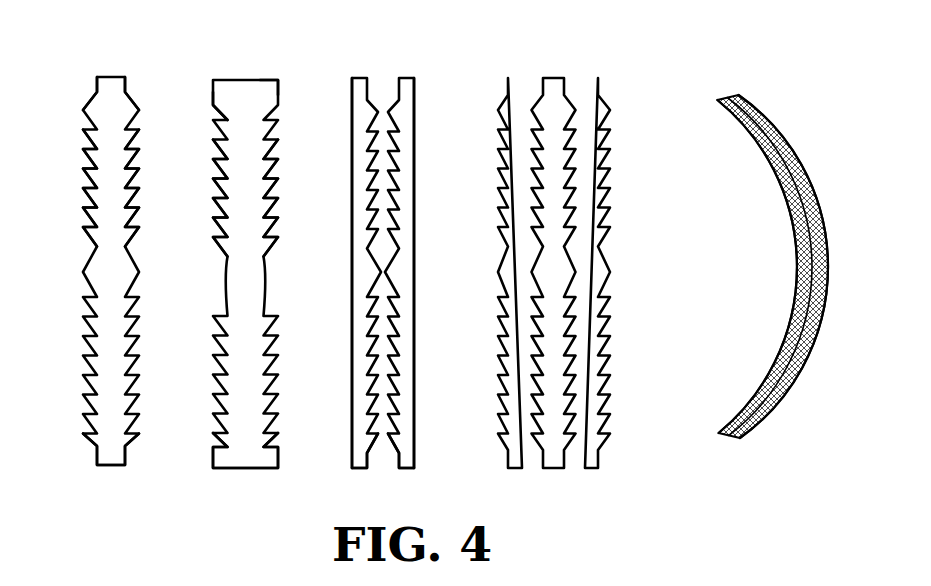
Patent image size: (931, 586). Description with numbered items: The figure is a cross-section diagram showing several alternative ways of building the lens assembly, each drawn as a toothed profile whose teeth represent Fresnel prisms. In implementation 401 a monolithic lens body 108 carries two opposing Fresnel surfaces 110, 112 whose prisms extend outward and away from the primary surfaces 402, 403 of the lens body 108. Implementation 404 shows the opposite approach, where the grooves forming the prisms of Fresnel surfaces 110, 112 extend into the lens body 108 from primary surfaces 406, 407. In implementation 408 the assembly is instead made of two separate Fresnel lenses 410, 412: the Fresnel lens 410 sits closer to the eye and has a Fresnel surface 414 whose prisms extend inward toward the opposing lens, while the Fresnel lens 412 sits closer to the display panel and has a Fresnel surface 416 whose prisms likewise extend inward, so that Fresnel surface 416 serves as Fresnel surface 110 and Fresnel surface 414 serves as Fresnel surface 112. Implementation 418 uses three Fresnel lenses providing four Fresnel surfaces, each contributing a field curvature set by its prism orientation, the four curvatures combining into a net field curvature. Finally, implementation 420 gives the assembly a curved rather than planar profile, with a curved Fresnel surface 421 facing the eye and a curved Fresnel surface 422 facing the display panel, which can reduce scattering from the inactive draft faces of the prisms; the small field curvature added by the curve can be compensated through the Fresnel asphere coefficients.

The implementation 401 is at (108, 66).
The primary surface 402 is at (97, 88).
The primary surface 403 is at (127, 88).
The implementation 404 is at (246, 66).
The primary surface 406 is at (213, 105).
The primary surface 407 is at (278, 82).
The implementation 408 is at (383, 66).
The Fresnel lens 410 is at (352, 287).
The Fresnel lens 412 is at (414, 287).
The Fresnel surface 414 is at (375, 458).
The Fresnel surface 416 is at (391, 458).
The implementation 418 is at (549, 66).
The implementation 420 is at (746, 66).
The curved Fresnel surface 421 is at (740, 150).
The curved Fresnel surface 422 is at (781, 129).
The Fresnel surface 110 is at (74, 212).
The Fresnel surface 112 is at (146, 212).
The lens body 108 is at (111, 450).